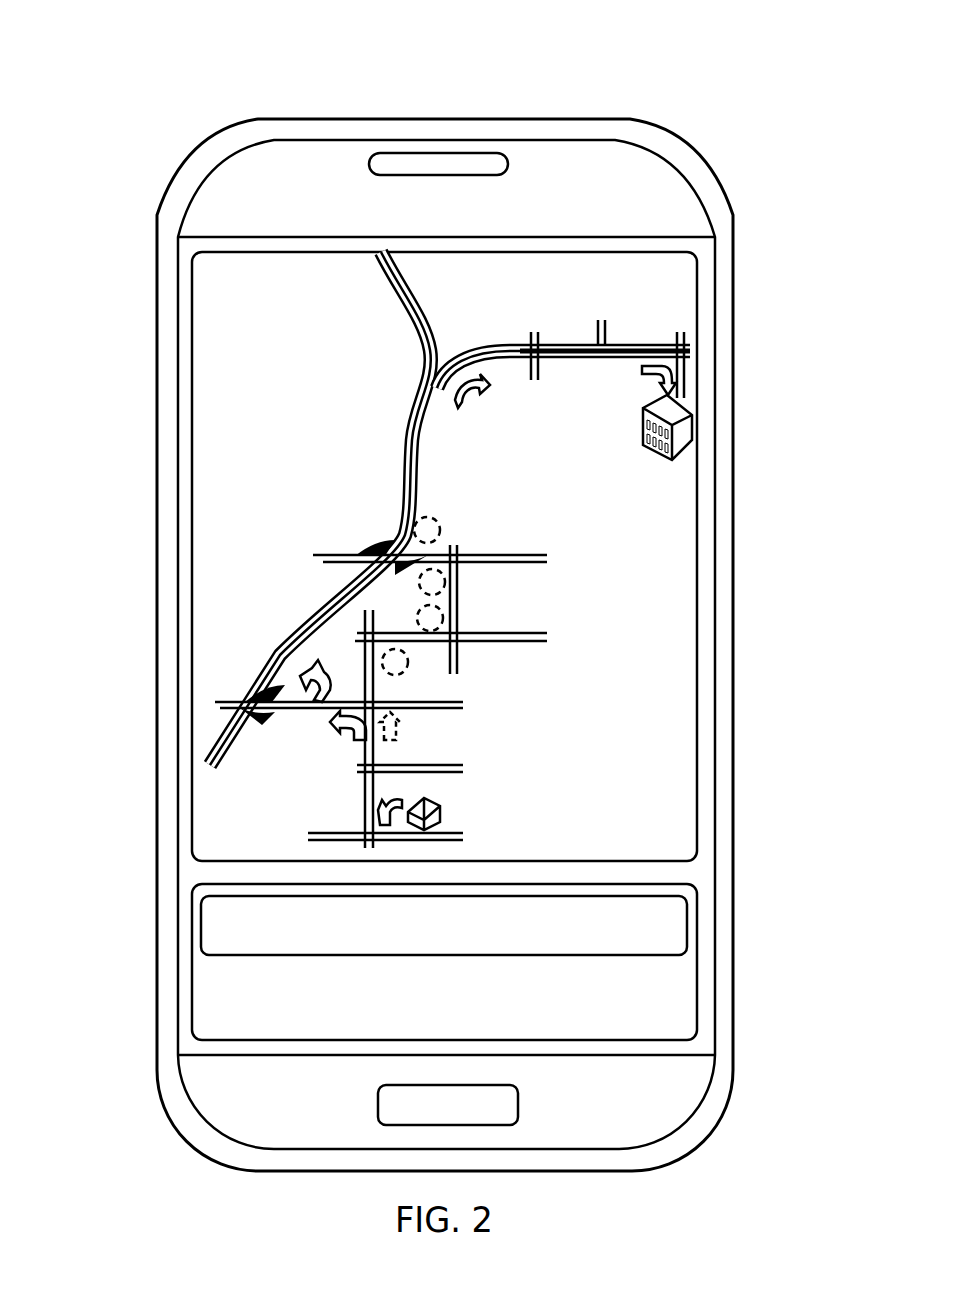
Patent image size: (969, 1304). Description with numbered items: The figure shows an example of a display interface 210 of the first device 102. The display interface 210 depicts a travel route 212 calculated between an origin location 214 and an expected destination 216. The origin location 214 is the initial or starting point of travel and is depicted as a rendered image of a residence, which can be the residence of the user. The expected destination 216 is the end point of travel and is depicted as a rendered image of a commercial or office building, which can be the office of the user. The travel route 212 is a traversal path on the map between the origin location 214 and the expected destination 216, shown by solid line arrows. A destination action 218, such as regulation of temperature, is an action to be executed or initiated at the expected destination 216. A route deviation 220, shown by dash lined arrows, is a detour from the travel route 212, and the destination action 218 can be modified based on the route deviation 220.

The first device 102 is at (280, 80).
The display interface 210 is at (190, 352).
The travel route 212 is at (305, 672).
The origin location 214 is at (443, 812).
The expected destination 216 is at (675, 410).
The destination action 218 is at (665, 926).
The route deviation 220 is at (420, 530).